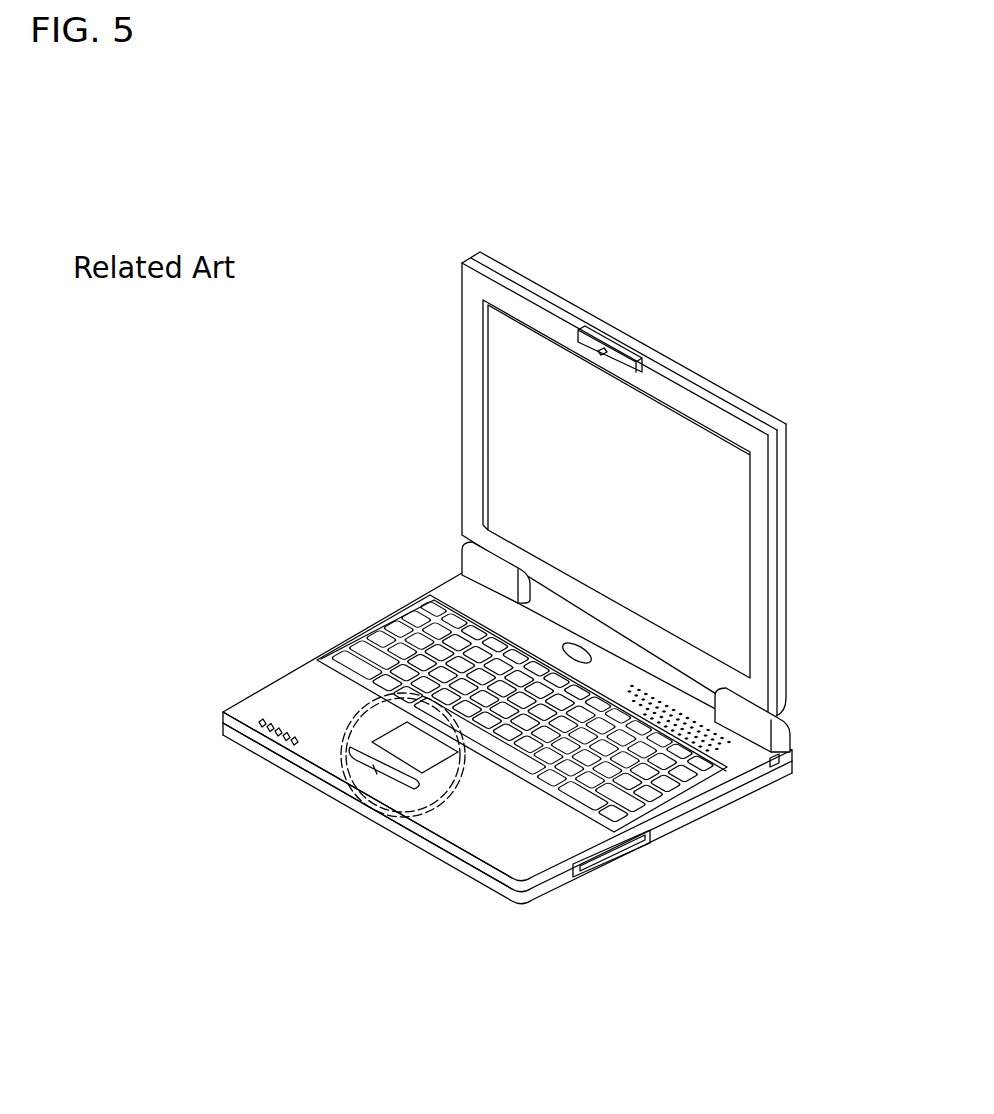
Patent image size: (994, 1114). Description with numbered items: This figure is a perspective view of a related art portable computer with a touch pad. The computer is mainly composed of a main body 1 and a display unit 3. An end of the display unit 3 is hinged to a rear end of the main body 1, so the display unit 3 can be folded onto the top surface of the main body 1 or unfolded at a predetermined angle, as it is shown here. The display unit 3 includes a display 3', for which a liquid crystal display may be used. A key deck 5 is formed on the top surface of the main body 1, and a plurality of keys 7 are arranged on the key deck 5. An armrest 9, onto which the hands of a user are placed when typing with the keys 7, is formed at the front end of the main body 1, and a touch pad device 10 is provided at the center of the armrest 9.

The main body 1 is at (730, 790).
The display unit 3 is at (690, 489).
The display 3' is at (701, 489).
The key deck 5 is at (258, 705).
The keys 7 is at (668, 792).
The armrest 9 is at (517, 837).
The touch pad device 10 is at (358, 711).